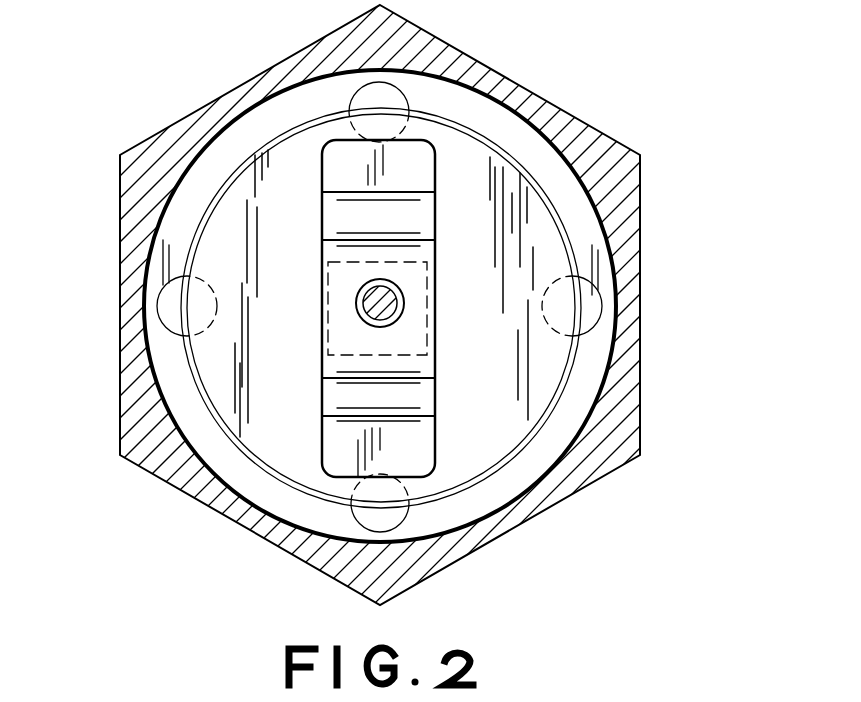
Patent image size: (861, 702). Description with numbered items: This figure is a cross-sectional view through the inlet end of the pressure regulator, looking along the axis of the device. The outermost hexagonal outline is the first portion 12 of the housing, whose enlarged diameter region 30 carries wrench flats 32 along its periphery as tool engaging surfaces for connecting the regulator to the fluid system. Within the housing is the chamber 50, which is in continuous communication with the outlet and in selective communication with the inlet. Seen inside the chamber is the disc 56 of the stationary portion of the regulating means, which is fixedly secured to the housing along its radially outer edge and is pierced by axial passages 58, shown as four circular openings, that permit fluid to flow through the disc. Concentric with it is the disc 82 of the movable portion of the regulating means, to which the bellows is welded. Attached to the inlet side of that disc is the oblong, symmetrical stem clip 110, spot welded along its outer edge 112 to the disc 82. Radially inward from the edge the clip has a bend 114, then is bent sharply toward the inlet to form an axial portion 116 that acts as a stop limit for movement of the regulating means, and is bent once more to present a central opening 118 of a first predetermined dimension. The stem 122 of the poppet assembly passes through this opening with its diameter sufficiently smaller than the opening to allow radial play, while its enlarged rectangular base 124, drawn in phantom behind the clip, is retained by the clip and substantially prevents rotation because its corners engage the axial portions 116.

The first portion 12 is at (603, 147).
The enlarged diameter region 30 is at (158, 150).
The wrench flats 32 is at (447, 47).
The chamber 50 is at (520, 112).
The disc 56 is at (570, 410).
The axial passages 58 is at (292, 588).
The disc 82 is at (545, 356).
The stem clip 110 is at (422, 224).
The outer edge 112 is at (408, 456).
The bend 114 is at (357, 415).
The axial portion 116 is at (407, 375).
The central opening 118 is at (368, 286).
The stem 122 is at (266, 273).
The rectangular base 124 is at (413, 288).